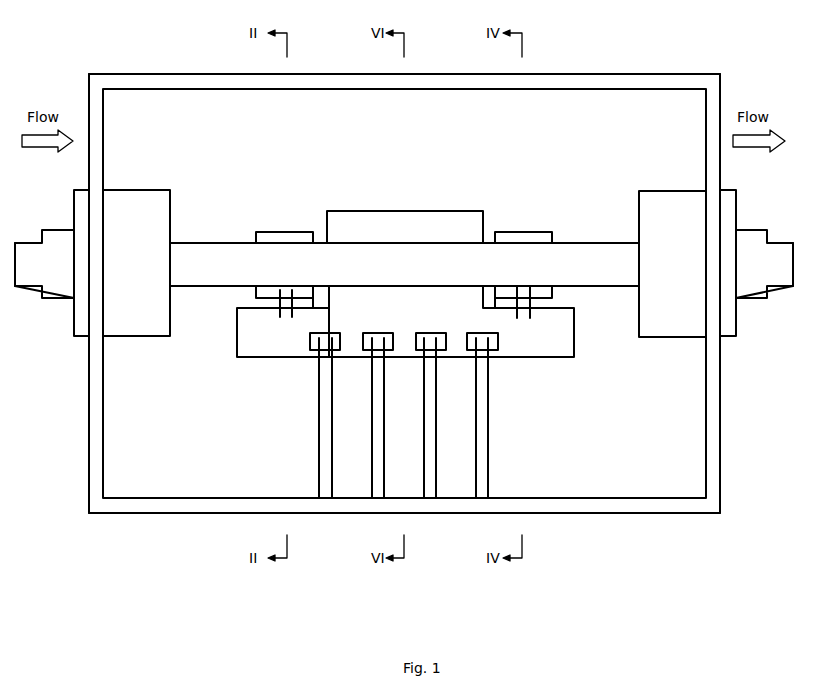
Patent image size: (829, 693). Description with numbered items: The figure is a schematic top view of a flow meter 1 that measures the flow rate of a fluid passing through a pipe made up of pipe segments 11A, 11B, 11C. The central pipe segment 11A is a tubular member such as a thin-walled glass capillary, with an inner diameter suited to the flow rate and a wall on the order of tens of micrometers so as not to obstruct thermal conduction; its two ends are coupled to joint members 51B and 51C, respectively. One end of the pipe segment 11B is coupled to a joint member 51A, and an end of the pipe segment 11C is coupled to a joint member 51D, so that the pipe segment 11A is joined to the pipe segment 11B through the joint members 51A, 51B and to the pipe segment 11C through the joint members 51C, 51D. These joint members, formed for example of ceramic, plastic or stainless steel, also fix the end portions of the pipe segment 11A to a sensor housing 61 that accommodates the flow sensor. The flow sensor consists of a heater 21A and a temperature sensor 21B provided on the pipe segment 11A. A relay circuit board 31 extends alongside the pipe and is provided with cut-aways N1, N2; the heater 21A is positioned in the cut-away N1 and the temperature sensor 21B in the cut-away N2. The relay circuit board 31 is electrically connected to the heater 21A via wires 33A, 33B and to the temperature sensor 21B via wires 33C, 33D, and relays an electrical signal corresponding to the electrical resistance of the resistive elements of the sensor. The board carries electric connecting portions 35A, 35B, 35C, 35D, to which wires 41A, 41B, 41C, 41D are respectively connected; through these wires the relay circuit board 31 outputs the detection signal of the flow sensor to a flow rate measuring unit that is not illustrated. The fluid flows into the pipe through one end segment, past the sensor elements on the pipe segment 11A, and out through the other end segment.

The flow meter 1 is at (140, 66).
The sensor housing 61 is at (660, 74).
The pipe segment 11A is at (577, 243).
The pipe segment 11B is at (775, 244).
The pipe segment 11C is at (30, 238).
The heater 21A is at (540, 232).
The temperature sensor 21B is at (272, 232).
The relay circuit board 31 is at (365, 212).
The wire 33A is at (532, 316).
The wire 33B is at (515, 314).
The wire 33C is at (294, 312).
The wire 33D is at (282, 317).
The electric connecting portion 35A is at (492, 356).
The electric connecting portion 35B is at (443, 356).
The electric connecting portion 35C is at (368, 356).
The electric connecting portion 35D is at (315, 356).
The wire 41A is at (491, 470).
The wire 41B is at (439, 470).
The wire 41C is at (370, 466).
The wire 41D is at (318, 462).
The joint member 51A is at (730, 190).
The joint member 51B is at (665, 191).
The joint member 51C is at (140, 190).
The joint member 51D is at (76, 190).
The cut-away N1 is at (509, 213).
The cut-away N2 is at (305, 214).